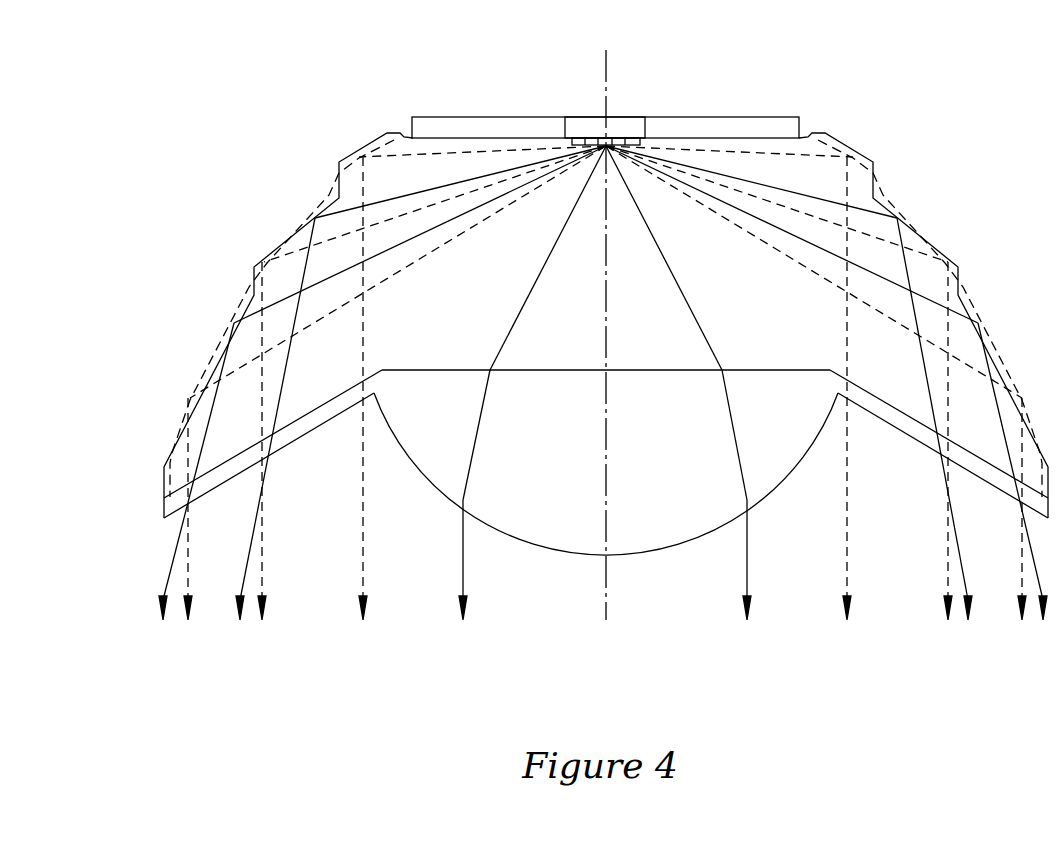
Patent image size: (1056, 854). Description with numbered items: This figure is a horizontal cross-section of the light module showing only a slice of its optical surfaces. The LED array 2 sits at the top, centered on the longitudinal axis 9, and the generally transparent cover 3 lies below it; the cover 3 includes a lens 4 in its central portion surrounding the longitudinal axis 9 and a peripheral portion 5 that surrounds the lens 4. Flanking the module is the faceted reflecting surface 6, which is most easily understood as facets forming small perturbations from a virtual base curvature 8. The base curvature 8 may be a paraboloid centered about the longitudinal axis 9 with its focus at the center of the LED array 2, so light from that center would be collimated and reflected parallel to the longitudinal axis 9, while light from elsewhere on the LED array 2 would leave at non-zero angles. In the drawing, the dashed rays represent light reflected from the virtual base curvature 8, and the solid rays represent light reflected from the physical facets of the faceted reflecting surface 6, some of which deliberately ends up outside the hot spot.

The LED array 2 is at (598, 142).
The cover 3 is at (305, 425).
The lens 4 is at (653, 528).
The peripheral portion 5 is at (916, 430).
The faceted reflecting surface 6 is at (955, 262).
The base curvature 8 is at (892, 197).
The longitudinal axis 9 is at (606, 72).